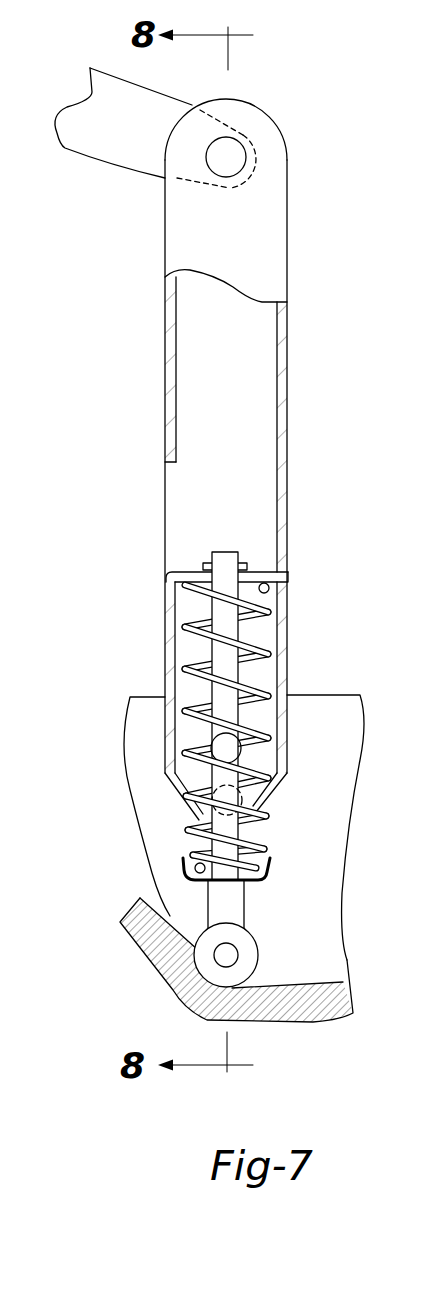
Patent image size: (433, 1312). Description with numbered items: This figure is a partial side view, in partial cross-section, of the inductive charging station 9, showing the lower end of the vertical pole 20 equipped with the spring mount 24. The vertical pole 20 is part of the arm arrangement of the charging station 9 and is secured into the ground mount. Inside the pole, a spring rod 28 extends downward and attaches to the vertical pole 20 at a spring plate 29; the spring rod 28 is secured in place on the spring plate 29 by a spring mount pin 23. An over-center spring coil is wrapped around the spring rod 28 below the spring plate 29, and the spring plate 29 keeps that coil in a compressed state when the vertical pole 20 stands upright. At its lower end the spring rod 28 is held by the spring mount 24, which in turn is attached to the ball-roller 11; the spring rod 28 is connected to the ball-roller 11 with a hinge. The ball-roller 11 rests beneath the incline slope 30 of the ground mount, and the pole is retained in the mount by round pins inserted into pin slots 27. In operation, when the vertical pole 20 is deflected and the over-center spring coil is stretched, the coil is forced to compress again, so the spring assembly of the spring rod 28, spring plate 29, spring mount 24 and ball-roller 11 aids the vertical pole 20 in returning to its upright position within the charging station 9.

The charging station 9 is at (344, 328).
The ball-roller 11 is at (252, 955).
The vertical pole 20 is at (165, 328).
The spring mount pin 23 is at (244, 562).
The spring mount 24 is at (268, 872).
The pin slot 27 is at (241, 757).
The spring rod 28 is at (222, 615).
The spring plate 29 is at (288, 577).
The incline slope 30 is at (168, 910).